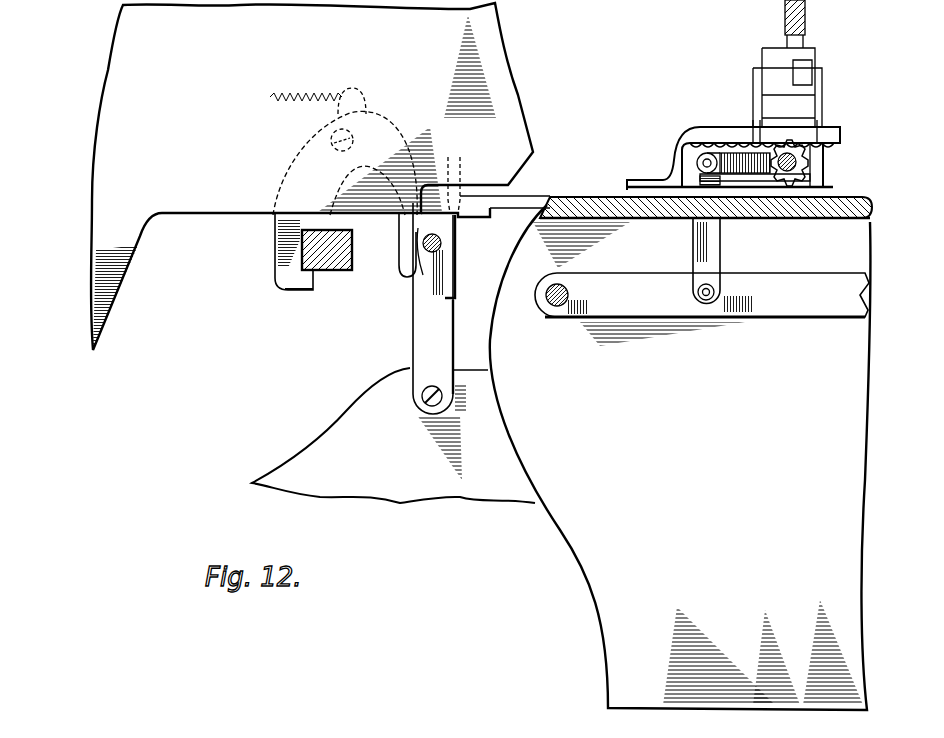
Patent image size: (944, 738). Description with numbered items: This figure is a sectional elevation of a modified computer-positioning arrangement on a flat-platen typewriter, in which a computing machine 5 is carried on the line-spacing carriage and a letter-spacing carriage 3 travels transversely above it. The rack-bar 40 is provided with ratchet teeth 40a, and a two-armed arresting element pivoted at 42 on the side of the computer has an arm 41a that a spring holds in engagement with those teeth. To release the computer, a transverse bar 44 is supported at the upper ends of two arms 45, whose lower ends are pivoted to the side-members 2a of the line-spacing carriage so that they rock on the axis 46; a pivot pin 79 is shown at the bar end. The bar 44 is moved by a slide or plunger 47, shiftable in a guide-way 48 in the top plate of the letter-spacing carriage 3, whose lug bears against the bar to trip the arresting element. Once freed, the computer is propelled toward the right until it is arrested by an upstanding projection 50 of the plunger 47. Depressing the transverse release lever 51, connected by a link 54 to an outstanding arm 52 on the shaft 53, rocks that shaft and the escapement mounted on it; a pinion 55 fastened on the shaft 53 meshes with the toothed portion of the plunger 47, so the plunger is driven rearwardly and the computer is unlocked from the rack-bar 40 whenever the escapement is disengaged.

The computing machine 5 is at (520, 150).
The pivot 42 is at (350, 139).
The upstanding projection 50 is at (452, 172).
The slide or plunger 47 is at (550, 207).
The outstanding arm 52 is at (730, 162).
The shaft 53 is at (808, 160).
The pinion 55 is at (815, 178).
The guide-way 48 is at (640, 220).
The link 54 is at (728, 261).
The transverse release lever 51 is at (760, 310).
The letter-spacing carriage 3 is at (680, 457).
The side-members of line-spacing carriage 2a is at (393, 435).
The arms 45 is at (443, 328).
The axis 46 is at (440, 404).
The pin 79 is at (443, 262).
The transverse bar 44 is at (412, 278).
The rack-bar 40 is at (353, 250).
The arm of arresting element 41a is at (282, 257).
The ratchet teeth 40a is at (302, 272).